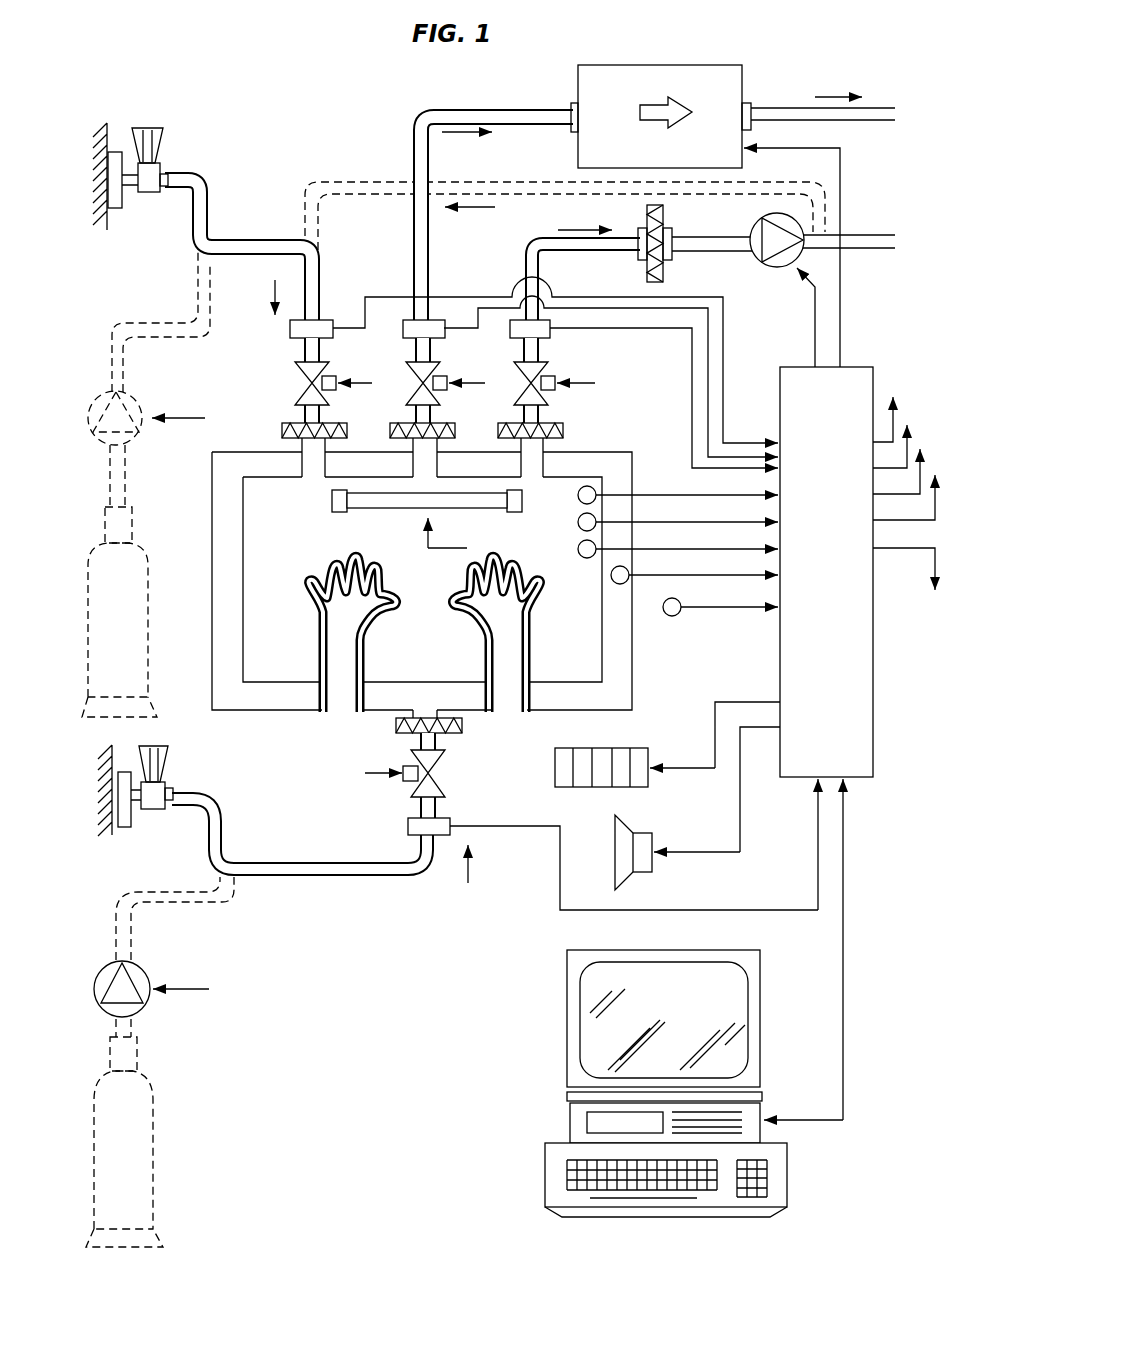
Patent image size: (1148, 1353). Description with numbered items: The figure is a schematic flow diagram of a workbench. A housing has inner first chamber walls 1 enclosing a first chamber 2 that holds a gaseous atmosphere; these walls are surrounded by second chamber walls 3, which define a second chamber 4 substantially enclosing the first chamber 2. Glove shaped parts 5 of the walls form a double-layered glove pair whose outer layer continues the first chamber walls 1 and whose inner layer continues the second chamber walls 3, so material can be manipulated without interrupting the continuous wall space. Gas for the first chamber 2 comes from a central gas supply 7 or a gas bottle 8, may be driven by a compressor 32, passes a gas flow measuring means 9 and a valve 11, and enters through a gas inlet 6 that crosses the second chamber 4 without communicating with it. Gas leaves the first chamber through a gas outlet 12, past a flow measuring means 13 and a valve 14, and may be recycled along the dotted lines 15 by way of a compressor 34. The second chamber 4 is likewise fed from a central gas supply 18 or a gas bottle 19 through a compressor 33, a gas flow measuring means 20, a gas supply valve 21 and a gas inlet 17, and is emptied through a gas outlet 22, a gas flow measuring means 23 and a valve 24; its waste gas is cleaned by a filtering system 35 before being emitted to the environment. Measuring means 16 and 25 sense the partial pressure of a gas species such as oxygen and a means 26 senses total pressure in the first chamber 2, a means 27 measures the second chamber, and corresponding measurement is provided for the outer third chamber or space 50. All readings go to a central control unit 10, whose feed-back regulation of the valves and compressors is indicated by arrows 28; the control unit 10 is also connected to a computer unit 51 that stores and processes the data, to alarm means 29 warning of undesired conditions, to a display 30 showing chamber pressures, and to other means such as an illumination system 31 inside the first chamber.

The inner first chamber walls 1 is at (280, 682).
The first chamber 2 is at (290, 668).
The second chamber walls 3 is at (222, 712).
The second chamber 4 is at (248, 696).
The glove shaped parts of the chamber walls 5 is at (482, 645).
The gas inlet 6 is at (300, 455).
The central gas supply 7 is at (150, 175).
The gas bottle 8 is at (130, 565).
The gas flow measuring means 9 is at (295, 330).
The central control unit 10 is at (876, 735).
The valve 11 is at (315, 380).
The gas outlet 12 is at (540, 458).
The flow measuring means 13 is at (545, 328).
The valve 14 is at (550, 380).
The dotted lines 15 is at (372, 182).
The gas measuring means 16 is at (578, 504).
The gas inlet 17 is at (440, 712).
The central gas supply 18 is at (132, 803).
The gas bottle 19 is at (130, 1093).
The gas flow measuring means 20 is at (455, 820).
The gas supply valve 21 is at (425, 768).
The gas outlet 22 is at (428, 445).
The gas flow measuring means 23 is at (440, 322).
The valve 24 is at (440, 378).
The gas measuring means 25 is at (580, 528).
The total gas pressure measuring means 26 is at (582, 557).
The measuring means 27 is at (618, 584).
The arrows 28 is at (920, 462).
The alarm means 29 is at (628, 838).
The display 30 is at (612, 762).
The lamp 31 is at (365, 502).
The gas compressor 32 is at (130, 395).
The gas compressor 33 is at (145, 985).
The compressor 34 is at (780, 237).
The filtering system 35 is at (703, 82).
The outer third chamber or space 50 is at (676, 616).
The computer unit 51 is at (775, 1175).